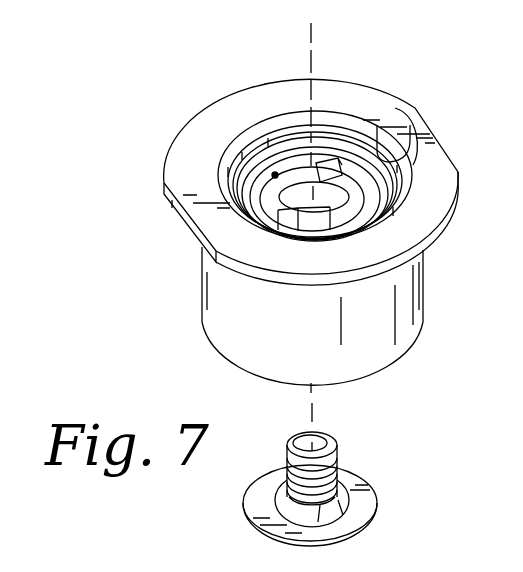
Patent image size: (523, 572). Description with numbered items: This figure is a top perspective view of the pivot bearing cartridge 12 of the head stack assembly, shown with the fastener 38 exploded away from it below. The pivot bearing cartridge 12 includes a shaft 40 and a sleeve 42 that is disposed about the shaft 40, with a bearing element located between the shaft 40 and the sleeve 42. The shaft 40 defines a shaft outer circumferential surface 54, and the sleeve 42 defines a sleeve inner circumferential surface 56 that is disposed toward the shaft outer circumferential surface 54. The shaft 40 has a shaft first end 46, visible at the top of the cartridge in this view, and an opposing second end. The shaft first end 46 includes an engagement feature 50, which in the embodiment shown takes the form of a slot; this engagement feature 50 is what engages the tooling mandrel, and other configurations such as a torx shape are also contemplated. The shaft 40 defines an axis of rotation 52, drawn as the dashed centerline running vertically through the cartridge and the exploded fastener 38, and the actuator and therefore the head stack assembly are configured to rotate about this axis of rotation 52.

The pivot bearing cartridge 12 is at (132, 92).
The fastener 38 is at (372, 505).
The shaft 40 is at (300, 150).
The sleeve 42 is at (183, 157).
The shaft first end 46 is at (277, 158).
The engagement feature 50 is at (335, 162).
The axis of rotation 52 is at (305, 48).
The shaft outer circumferential surface 54 is at (310, 232).
The sleeve inner circumferential surface 56 is at (377, 125).